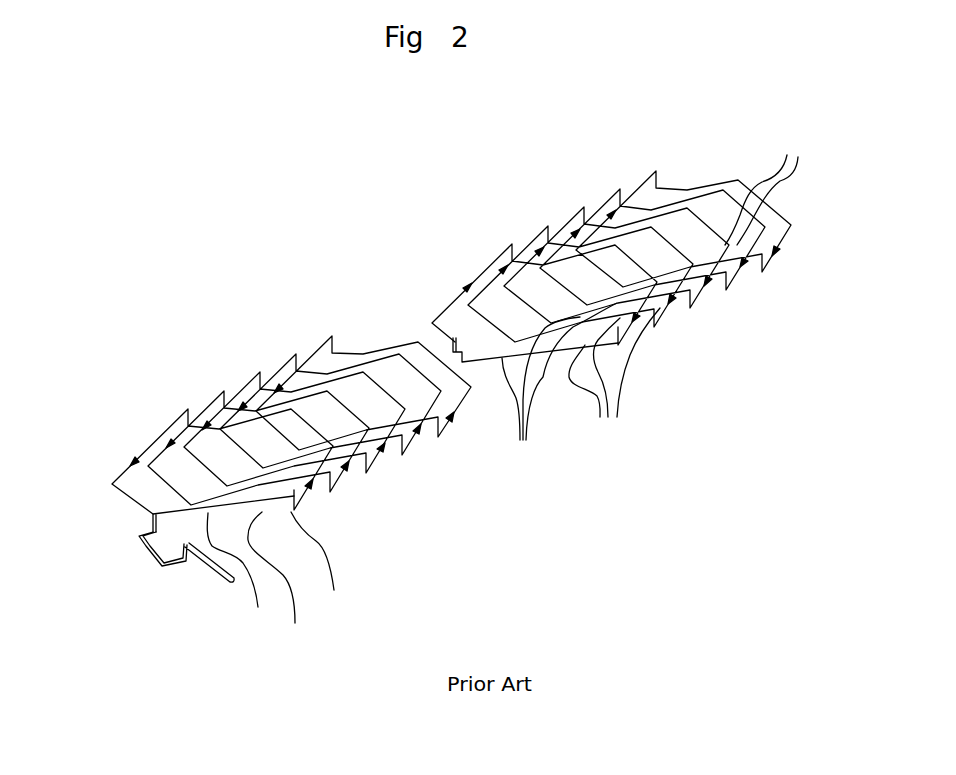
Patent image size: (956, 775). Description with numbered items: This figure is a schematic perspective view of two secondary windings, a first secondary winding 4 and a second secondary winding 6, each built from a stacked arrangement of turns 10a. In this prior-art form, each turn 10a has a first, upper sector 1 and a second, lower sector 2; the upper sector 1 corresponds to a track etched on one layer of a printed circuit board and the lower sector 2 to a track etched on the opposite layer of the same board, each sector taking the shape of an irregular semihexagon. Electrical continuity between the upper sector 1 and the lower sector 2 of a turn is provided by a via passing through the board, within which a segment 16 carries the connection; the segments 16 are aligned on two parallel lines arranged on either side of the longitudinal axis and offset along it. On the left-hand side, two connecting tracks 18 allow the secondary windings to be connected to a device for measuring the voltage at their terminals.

The first, upper sector 1 is at (132, 358).
The second, lower sector 2 is at (546, 369).
The first secondary winding 4 is at (392, 536).
The second secondary winding 6 is at (543, 183).
The turns 10a is at (452, 428).
The segment 16 is at (218, 343).
The connecting tracks 18 is at (212, 567).